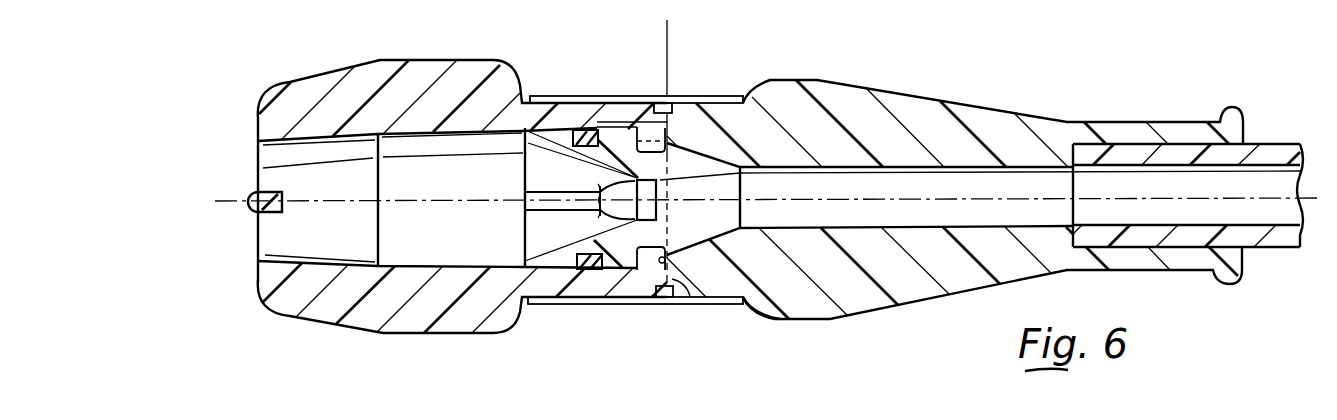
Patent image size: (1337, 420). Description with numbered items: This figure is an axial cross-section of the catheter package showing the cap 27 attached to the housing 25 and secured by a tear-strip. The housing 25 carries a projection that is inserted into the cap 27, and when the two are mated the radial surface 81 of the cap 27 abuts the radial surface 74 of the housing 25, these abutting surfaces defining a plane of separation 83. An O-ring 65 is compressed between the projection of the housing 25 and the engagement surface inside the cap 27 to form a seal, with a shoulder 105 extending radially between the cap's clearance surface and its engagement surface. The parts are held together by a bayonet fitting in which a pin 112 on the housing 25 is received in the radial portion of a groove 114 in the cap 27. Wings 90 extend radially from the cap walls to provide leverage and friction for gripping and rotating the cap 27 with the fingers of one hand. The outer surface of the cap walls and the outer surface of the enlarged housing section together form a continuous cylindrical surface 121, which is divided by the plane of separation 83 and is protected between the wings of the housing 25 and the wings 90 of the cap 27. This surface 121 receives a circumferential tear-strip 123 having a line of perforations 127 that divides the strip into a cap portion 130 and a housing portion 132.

The housing 25 is at (955, 90).
The cap 27 is at (360, 53).
The O-ring 65 is at (590, 272).
The radial surface of housing 74 is at (668, 262).
The radial surface of cap 81 is at (665, 262).
The plane of separation 83 is at (667, 35).
The wings of cap 90 is at (377, 312).
The shoulder 105 is at (600, 272).
The pin 112 is at (597, 225).
The groove 114 is at (600, 175).
The continuous cylindrical surface 121 is at (625, 97).
The circumferential tear-strip 123 is at (643, 80).
The line of perforations 127 is at (687, 97).
The cap portion 130 is at (558, 100).
The housing portion 132 is at (745, 100).